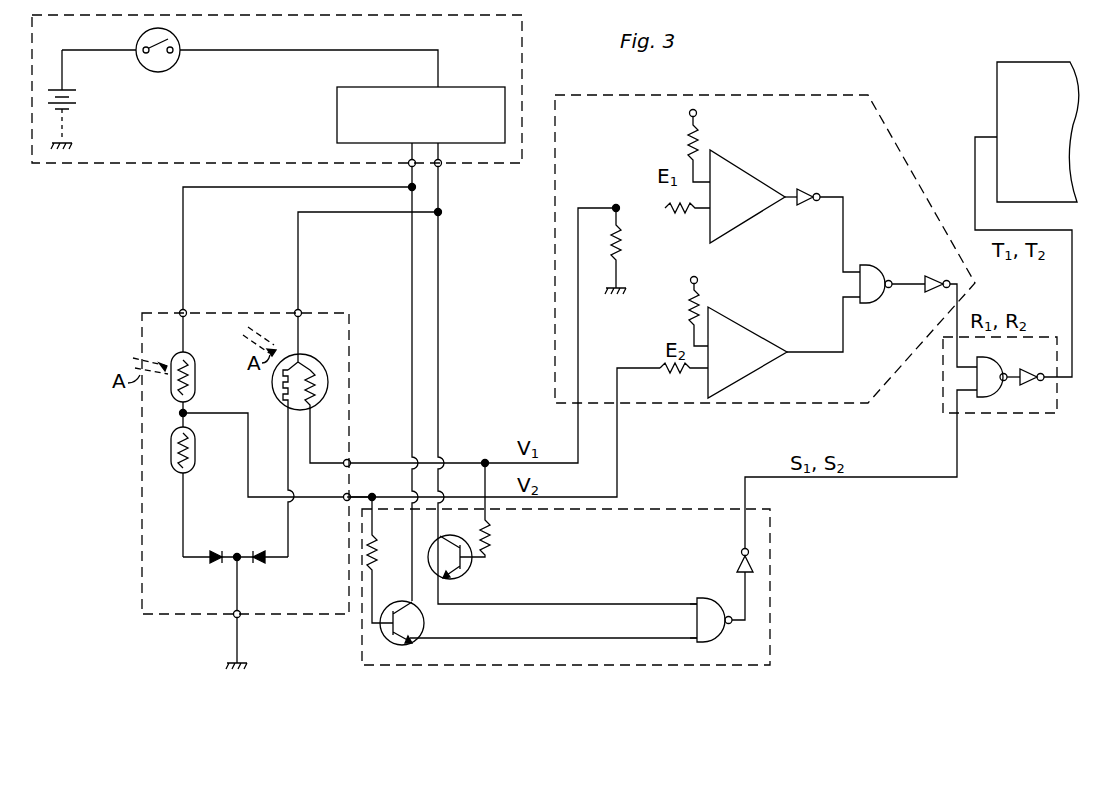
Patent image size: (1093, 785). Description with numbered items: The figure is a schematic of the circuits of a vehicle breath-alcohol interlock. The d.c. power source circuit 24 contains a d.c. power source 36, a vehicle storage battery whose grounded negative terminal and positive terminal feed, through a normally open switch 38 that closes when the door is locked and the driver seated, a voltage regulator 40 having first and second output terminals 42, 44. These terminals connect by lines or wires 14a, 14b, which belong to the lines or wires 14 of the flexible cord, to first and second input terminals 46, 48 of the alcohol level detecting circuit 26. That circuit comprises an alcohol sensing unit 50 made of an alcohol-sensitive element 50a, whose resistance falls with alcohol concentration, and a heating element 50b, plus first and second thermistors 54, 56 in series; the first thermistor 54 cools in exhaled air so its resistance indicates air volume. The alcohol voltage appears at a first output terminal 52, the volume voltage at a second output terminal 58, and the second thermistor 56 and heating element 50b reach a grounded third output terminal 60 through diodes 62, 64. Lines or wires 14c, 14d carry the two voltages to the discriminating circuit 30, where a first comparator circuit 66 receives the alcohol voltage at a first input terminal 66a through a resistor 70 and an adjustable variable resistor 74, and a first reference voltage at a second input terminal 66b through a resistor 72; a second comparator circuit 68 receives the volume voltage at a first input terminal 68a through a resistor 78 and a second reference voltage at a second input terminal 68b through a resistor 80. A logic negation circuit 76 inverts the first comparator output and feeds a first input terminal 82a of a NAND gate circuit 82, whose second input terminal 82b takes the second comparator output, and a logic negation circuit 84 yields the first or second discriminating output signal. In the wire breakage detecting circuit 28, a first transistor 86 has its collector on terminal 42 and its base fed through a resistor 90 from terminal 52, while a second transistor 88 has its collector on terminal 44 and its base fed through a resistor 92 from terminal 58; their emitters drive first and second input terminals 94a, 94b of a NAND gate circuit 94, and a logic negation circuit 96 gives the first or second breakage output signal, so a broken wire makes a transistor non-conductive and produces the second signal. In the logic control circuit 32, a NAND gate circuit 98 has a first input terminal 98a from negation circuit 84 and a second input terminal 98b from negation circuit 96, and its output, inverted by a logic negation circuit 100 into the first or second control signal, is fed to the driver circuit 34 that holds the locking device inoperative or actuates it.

The lines or wires 14 is at (240, 640).
The line or wire 14a is at (298, 235).
The line or wire 14b is at (183, 235).
The line or wire 14c is at (380, 463).
The line or wire 14d is at (348, 505).
The d.c. power source circuit 24 is at (522, 40).
The alcohol level detecting circuit 26 is at (255, 313).
The wire breakage detecting circuit 28 is at (680, 509).
The discriminating circuit 30 is at (755, 95).
The logic control circuit 32 is at (1012, 413).
The driver circuit 34 is at (997, 92).
The d.c. power source 36 is at (76, 97).
The normally open switch 38 is at (172, 68).
The voltage regulator 40 is at (337, 108).
The first output terminal 42 is at (441, 167).
The second output terminal 44 is at (409, 166).
The first input terminal 46 is at (301, 311).
The second input terminal 48 is at (180, 311).
The alcohol sensing unit 50 is at (313, 360).
The alcohol-sensitive element 50a is at (317, 395).
The heating element 50b is at (285, 393).
The first output terminal 52 is at (344, 466).
The first thermistor 54 is at (196, 375).
The second thermistor 56 is at (196, 455).
The second output terminal 58 is at (344, 500).
The third output terminal 60 is at (240, 611).
The diode 62 is at (216, 550).
The diode 64 is at (259, 550).
The first comparator circuit 66 is at (752, 176).
The first input terminal 66a is at (700, 215).
The second input terminal 66b is at (700, 175).
The second comparator circuit 68 is at (752, 330).
The first input terminal 68a is at (700, 375).
The second input terminal 68b is at (700, 340).
The resistor 70 is at (690, 215).
The resistor 72 is at (688, 137).
The variable resistor 74 is at (622, 250).
The logic negation circuit 76 is at (818, 180).
The resistor 78 is at (665, 375).
The resistor 80 is at (690, 305).
The NAND gate circuit 82 is at (878, 300).
The first input terminal 82a is at (855, 268).
The second input terminal 82b is at (855, 302).
The logic negation circuit 84 is at (940, 275).
The first transistor 86 is at (466, 573).
The second transistor 88 is at (425, 623).
The resistor 90 is at (490, 540).
The resistor 92 is at (377, 553).
The NAND gate circuit 94 is at (720, 640).
The first input terminal 94a is at (690, 598).
The second input terminal 94b is at (688, 640).
The logic negation circuit 96 is at (733, 556).
The NAND gate circuit 98 is at (985, 398).
The first input terminal 98a is at (957, 367).
The second input terminal 98b is at (963, 395).
The logic negation circuit 100 is at (1038, 384).